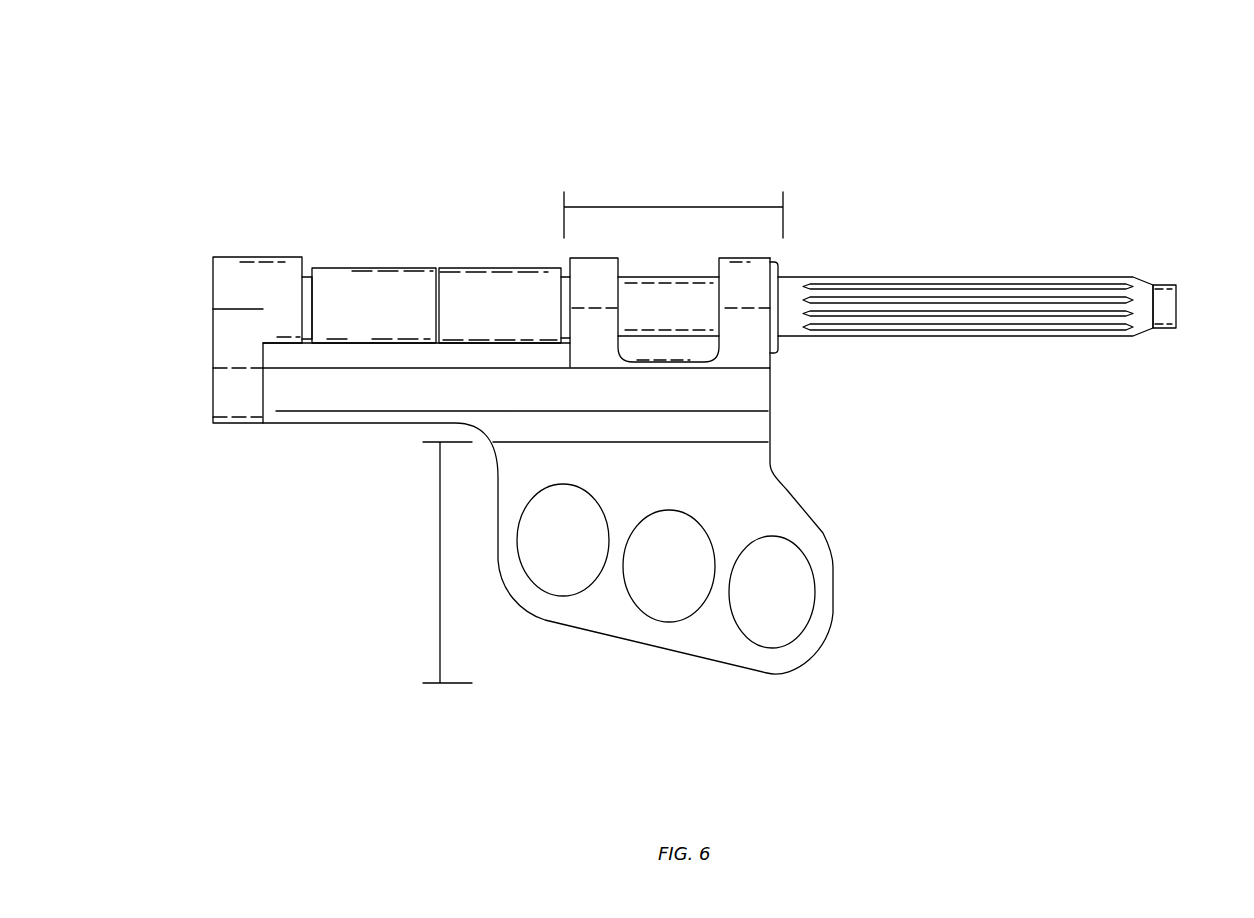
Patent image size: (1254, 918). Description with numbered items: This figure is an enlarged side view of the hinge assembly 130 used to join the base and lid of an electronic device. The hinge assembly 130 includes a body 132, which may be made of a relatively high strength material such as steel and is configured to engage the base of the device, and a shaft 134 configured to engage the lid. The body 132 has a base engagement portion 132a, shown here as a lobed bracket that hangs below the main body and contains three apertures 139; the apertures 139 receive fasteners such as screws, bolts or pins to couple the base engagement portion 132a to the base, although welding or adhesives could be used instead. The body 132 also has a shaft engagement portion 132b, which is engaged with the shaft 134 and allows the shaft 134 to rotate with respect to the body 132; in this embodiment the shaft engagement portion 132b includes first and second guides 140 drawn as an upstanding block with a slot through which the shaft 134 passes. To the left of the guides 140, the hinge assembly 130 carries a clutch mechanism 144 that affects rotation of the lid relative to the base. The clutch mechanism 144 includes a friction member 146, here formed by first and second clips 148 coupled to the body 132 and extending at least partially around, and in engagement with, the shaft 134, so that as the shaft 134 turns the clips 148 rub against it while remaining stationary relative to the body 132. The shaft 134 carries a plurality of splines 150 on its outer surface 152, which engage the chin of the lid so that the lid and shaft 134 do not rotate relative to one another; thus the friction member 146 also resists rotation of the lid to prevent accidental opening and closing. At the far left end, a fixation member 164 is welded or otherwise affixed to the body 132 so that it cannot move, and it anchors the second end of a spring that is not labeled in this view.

The hinge assembly 130 is at (203, 82).
The body 132 is at (788, 488).
The base engagement portion 132a is at (440, 563).
The shaft engagement portion 132b is at (689, 207).
The shaft 134 is at (1142, 253).
The apertures 139 is at (748, 642).
The first and second guides 140 is at (727, 258).
The clutch mechanism 144 is at (315, 192).
The friction member 146 is at (408, 220).
The first and second clips 148 is at (497, 267).
The splines 150 is at (1037, 308).
The outer surface 152 is at (907, 276).
The fixation member 164 is at (237, 262).